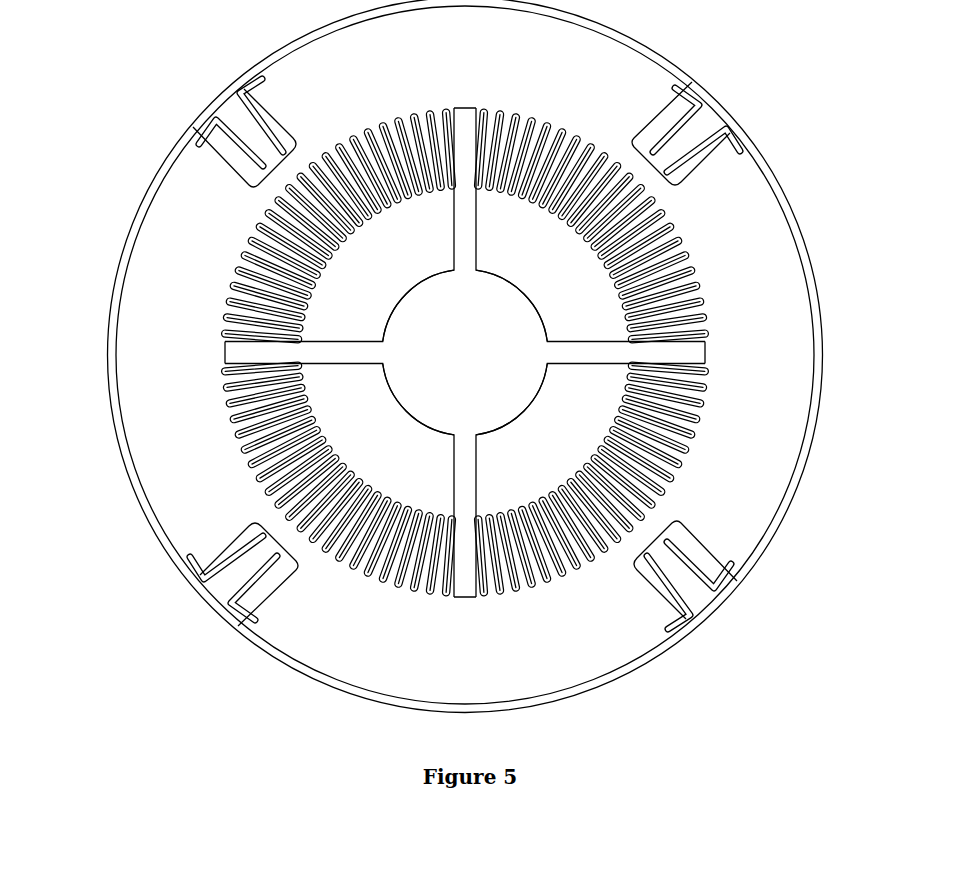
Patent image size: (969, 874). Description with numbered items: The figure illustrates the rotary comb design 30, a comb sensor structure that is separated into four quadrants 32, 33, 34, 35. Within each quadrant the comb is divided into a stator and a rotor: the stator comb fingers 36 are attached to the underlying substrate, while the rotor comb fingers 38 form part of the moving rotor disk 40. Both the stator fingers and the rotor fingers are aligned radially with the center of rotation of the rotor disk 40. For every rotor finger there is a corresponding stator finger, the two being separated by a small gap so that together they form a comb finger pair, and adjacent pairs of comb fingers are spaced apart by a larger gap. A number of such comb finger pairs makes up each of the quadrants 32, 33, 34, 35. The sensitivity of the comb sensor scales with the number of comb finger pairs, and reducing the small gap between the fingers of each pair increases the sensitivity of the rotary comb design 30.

The rotary comb design 30 is at (823, 217).
The first quadrant 32 is at (258, 225).
The second quadrant 33 is at (590, 225).
The third quadrant 34 is at (590, 481).
The fourth quadrant 35 is at (339, 481).
The stator comb fingers 36 is at (322, 300).
The rotor comb fingers 38 is at (222, 278).
The rotor disk 40 is at (699, 540).